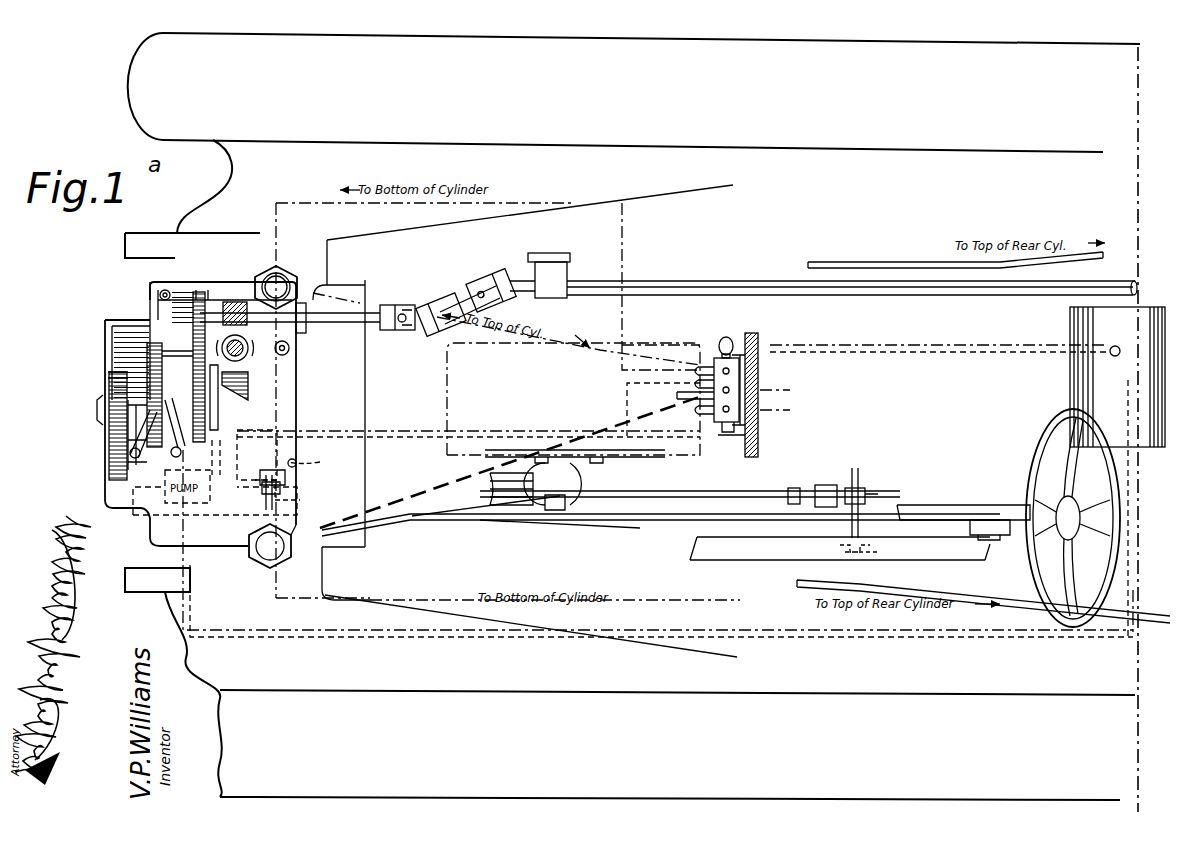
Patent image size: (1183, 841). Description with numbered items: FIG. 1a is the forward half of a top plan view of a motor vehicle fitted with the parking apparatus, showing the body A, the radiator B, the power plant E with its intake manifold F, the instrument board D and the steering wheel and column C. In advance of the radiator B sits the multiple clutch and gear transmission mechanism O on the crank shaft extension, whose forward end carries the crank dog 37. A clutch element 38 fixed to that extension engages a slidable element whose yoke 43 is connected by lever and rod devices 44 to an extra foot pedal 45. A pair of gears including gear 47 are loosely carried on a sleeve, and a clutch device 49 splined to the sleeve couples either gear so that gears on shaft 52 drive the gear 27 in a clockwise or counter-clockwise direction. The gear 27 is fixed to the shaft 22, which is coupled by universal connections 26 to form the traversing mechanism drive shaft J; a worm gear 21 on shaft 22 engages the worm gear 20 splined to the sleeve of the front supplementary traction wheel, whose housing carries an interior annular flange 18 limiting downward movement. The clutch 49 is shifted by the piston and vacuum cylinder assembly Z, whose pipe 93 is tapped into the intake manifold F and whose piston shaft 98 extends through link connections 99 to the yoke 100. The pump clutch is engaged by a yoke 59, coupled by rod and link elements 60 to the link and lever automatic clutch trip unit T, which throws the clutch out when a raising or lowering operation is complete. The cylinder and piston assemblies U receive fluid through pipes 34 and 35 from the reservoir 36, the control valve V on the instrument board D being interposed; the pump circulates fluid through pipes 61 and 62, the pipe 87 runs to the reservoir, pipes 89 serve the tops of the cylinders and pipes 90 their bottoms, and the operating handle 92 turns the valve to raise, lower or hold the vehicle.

The body A is at (1083, 44).
The radiator B is at (365, 362).
The multiple clutch and gear transmission mechanism O is at (142, 343).
The shaft 52 is at (160, 290).
The interior annular flange 18 is at (183, 367).
The gear 47 is at (162, 405).
The yoke 59 is at (150, 410).
The crank dog 37 is at (95, 412).
The clutch device 49 is at (108, 378).
The link connections 99 is at (215, 432).
The worm gear 21 is at (233, 300).
The gear 27 is at (200, 290).
The shaft 22 is at (258, 280).
The cylinder and piston assemblies U is at (258, 556).
The control valve V is at (290, 275).
The worm gear 20 is at (262, 366).
The clutch element 38 is at (250, 378).
The yoke 43 is at (248, 396).
The piston and vacuum cylinder assembly Z is at (272, 468).
The lever and rod devices 44 is at (300, 462).
The link and lever automatic clutch trip unit T is at (338, 484).
The shaft 98 is at (255, 485).
The rod and link elements 60 is at (150, 527).
The yoke 100 is at (215, 455).
The pipe 35 is at (312, 200).
The universal connections 26 is at (400, 305).
The pipe 34 is at (345, 292).
The traversing mechanism drive shaft J is at (765, 283).
The pipes 89 is at (888, 262).
The pipe 87 is at (937, 350).
The power plant E is at (598, 372).
The pipe 61 is at (390, 430).
The instrument board D is at (745, 440).
The operating handle 92 is at (760, 432).
The intake manifold F is at (575, 478).
The pipe 93 is at (425, 521).
The extra foot pedal 45 is at (827, 486).
The steering wheel and column C is at (1020, 500).
The fluid reservoir 36 is at (1082, 380).
The pipe 62 is at (470, 628).
The pipes 90 is at (352, 632).